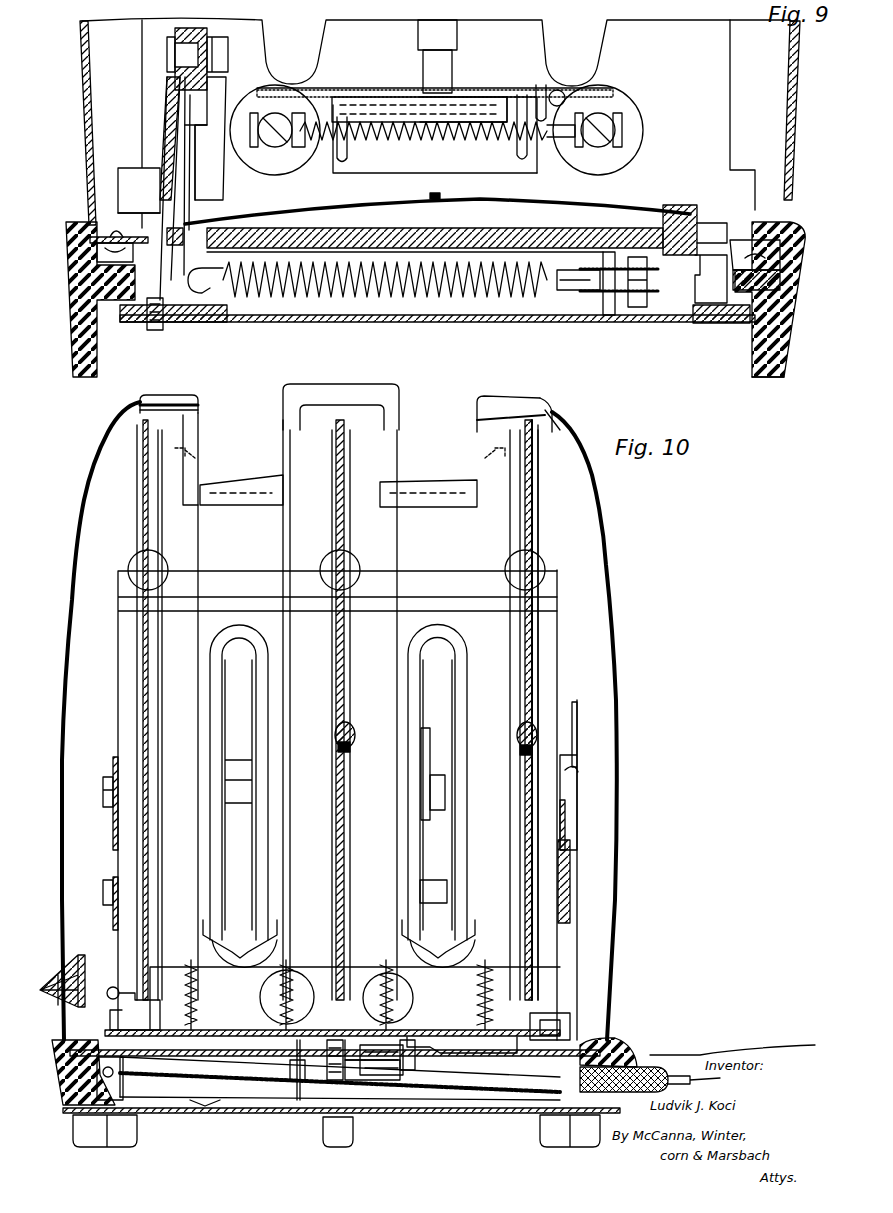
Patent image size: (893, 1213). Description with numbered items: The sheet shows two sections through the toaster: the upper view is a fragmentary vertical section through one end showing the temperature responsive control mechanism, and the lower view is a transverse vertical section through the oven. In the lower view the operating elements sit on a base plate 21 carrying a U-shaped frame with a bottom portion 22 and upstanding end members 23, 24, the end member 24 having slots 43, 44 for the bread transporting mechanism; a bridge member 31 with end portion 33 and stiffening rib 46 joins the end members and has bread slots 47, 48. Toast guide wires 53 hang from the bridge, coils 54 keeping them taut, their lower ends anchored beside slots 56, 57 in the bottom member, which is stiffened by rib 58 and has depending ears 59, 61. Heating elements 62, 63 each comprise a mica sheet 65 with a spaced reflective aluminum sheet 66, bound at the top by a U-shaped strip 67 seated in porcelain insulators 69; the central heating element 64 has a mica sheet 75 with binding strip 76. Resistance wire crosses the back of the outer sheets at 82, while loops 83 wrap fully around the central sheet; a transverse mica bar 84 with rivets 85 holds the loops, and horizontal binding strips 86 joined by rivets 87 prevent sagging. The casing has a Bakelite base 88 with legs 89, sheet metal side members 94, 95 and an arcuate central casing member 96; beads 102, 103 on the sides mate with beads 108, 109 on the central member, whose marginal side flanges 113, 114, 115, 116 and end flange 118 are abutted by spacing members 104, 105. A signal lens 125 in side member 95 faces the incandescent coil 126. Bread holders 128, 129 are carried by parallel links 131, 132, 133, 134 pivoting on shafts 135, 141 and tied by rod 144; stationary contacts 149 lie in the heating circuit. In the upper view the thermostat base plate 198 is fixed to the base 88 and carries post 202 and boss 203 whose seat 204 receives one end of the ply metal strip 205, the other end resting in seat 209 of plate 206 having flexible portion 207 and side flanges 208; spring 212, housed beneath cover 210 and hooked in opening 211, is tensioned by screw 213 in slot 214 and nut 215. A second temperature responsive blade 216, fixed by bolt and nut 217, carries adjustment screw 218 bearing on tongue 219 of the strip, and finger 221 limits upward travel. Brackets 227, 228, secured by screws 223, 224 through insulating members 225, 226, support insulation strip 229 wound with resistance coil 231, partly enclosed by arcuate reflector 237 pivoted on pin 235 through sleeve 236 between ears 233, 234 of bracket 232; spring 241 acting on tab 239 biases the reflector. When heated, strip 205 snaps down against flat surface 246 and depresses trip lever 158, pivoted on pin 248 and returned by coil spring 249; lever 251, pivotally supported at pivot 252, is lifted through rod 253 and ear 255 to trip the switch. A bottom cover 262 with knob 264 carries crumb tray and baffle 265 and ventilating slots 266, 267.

In FIG. 10, the base plate 21 is at (95, 1050).
In FIG. 10, the bottom portion 22 is at (575, 1030).
In FIG. 9, the end member 23 is at (675, 45).
In FIG. 10, the end member 24 is at (330, 745).
In FIG. 10, the bridge member 31 is at (257, 494).
In FIG. 10, the end portion 33 is at (462, 501).
In FIG. 10, the slot 43 is at (438, 662).
In FIG. 10, the slot 44 is at (240, 676).
In FIG. 10, the stiffening rib 46 is at (330, 425).
In FIG. 10, the slot 47 is at (444, 395).
In FIG. 10, the slot 48 is at (239, 404).
In FIG. 10, the toast guide wires 53 is at (280, 552).
In FIG. 10, the coils 54 is at (275, 985).
In FIG. 10, the slot 56 is at (452, 1026).
In FIG. 10, the slot 57 is at (234, 1036).
In FIG. 10, the rib 58 is at (345, 1045).
In FIG. 10, the depending ear 59 is at (412, 1080).
In FIG. 10, the depending ear 61 is at (295, 1102).
In FIG. 10, the heating element 62 is at (519, 651).
In FIG. 10, the heating element 63 is at (162, 684).
In FIG. 10, the central heating element 64 is at (320, 655).
In FIG. 10, the sheet of insulation material 65 is at (538, 662).
In FIG. 10, the sheet of heat reflective metal 66 is at (542, 680).
In FIG. 10, the U-shaped strip of reinforcing metal 67 is at (143, 444).
In FIG. 10, the porcelain insulator 69 is at (158, 560).
In FIG. 10, the mica sheet 75 is at (345, 660).
In FIG. 10, the binding strip 76 is at (290, 442).
In FIG. 10, the resistance wire 82 is at (140, 478).
In FIG. 10, the loops of resistance wire 83 is at (360, 812).
In FIG. 10, the transverse bar of mica 84 is at (522, 755).
In FIG. 10, the rivets 85 is at (520, 725).
In FIG. 10, the horizontal binding strips 86 is at (350, 752).
In FIG. 10, the rivets 87 is at (348, 725).
In FIG. 9, the base 88 is at (812, 302).
In FIG. 10, the base 88 is at (636, 1050).
In FIG. 9, the depending legs 89 is at (770, 377).
In FIG. 9, the side member 94 is at (82, 92).
In FIG. 10, the side member 94 is at (617, 665).
In FIG. 9, the side member 95 is at (796, 86).
In FIG. 10, the side member 95 is at (60, 668).
In FIG. 10, the central casing member 96 is at (342, 384).
In FIG. 10, the bead 102 is at (548, 402).
In FIG. 10, the bead 103 is at (135, 414).
In FIG. 10, the spacing member 104 is at (160, 398).
In FIG. 10, the spacing member 105 is at (510, 402).
In FIG. 10, the bead 108 is at (556, 413).
In FIG. 10, the bead 109 is at (138, 404).
In FIG. 10, the marginal side flange 113 is at (478, 400).
In FIG. 10, the marginal side flange 114 is at (400, 400).
In FIG. 10, the marginal side flange 115 is at (280, 405).
In FIG. 10, the marginal side flange 116 is at (200, 410).
In FIG. 10, the depending marginal end flange 118 is at (422, 490).
In FIG. 10, the signal lens 125 is at (58, 968).
In FIG. 10, the coil 126 is at (108, 985).
In FIG. 10, the bread holder 128 is at (215, 942).
In FIG. 10, the bread holder 129 is at (465, 945).
In FIG. 10, the parallel link 131 is at (113, 822).
In FIG. 10, the parallel link 132 is at (113, 920).
In FIG. 10, the parallel link 133 is at (568, 818).
In FIG. 10, the parallel link 134 is at (570, 915).
In FIG. 10, the shaft 135 is at (440, 892).
In FIG. 10, the shaft 141 is at (445, 768).
In FIG. 10, the rod 144 is at (448, 793).
In FIG. 10, the stationary contacts 149 is at (287, 985).
In FIG. 10, the trip lever 158 is at (370, 1082).
In FIG. 9, the thermostat base plate 198 is at (737, 325).
In FIG. 9, the upstanding post 202 is at (210, 98).
In FIG. 9, the upstanding boss 203 is at (690, 215).
In FIG. 9, the seat 204 is at (676, 205).
In FIG. 9, the ply metal thermally responsive strip 205 is at (598, 210).
In FIG. 9, the plate 206 is at (186, 150).
In FIG. 9, the flexible portion 207 is at (168, 100).
In FIG. 9, the side flanges 208 is at (172, 140).
In FIG. 9, the seat 209 is at (139, 192).
In FIG. 9, the cover 210 is at (680, 325).
In FIG. 9, the opening 211 is at (178, 318).
In FIG. 9, the spring 212 is at (275, 300).
In FIG. 9, the screw 213 is at (590, 292).
In FIG. 9, the slot 214 is at (612, 300).
In FIG. 9, the nut 215 is at (640, 308).
In FIG. 9, the ply metal temperature responsive blade 216 is at (176, 173).
In FIG. 9, the bolt and nut 217 is at (185, 50).
In FIG. 9, the adjustment screw 218 is at (172, 226).
In FIG. 9, the tongue 219 is at (262, 160).
In FIG. 9, the finger 221 is at (432, 196).
In FIG. 9, the screw 223 is at (606, 120).
In FIG. 9, the screw 224 is at (272, 147).
In FIG. 9, the insulating member 225 is at (640, 120).
In FIG. 9, the insulating member 226 is at (285, 165).
In FIG. 9, the bracket 227 is at (610, 158).
In FIG. 9, the bracket 228 is at (345, 168).
In FIG. 9, the strip of insulation material 229 is at (552, 155).
In FIG. 9, the resistance coil 231 is at (455, 142).
In FIG. 9, the bracket 232 is at (478, 97).
In FIG. 9, the ear 233 is at (550, 93).
In FIG. 9, the ear 234 is at (322, 90).
In FIG. 9, the pin 235 is at (350, 88).
In FIG. 9, the sleeve 236 is at (384, 105).
In FIG. 9, the arcuate reflector 237 is at (510, 85).
In FIG. 9, the tab 239 is at (437, 71).
In FIG. 9, the spring 241 is at (440, 32).
In FIG. 9, the flat metal surface 246 is at (520, 210).
In FIG. 10, the pin 248 is at (335, 1082).
In FIG. 10, the coil spring 249 is at (392, 1077).
In FIG. 10, the lever 251 is at (240, 1088).
In FIG. 10, the pivot 252 is at (110, 1080).
In FIG. 10, the rod 253 is at (578, 945).
In FIG. 10, the ear 255 is at (578, 767).
In FIG. 10, the bottom cover 262 is at (432, 1115).
In FIG. 10, the knob 264 is at (335, 1140).
In FIG. 10, the crumb tray and baffle 265 is at (158, 1095).
In FIG. 10, the slot 266 is at (482, 1115).
In FIG. 10, the slot 267 is at (205, 1110).